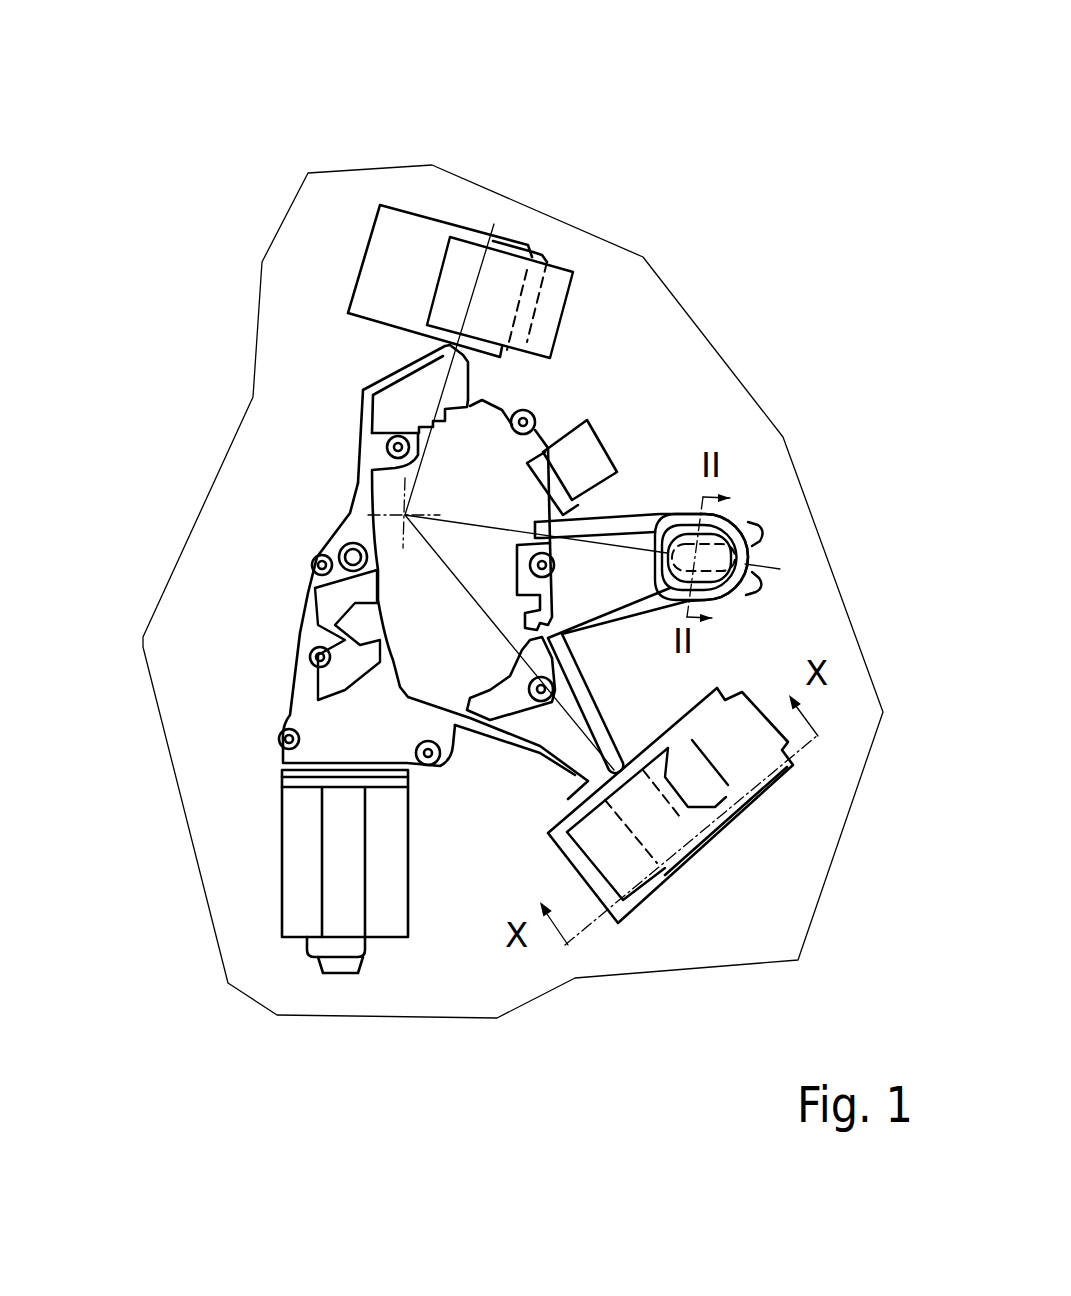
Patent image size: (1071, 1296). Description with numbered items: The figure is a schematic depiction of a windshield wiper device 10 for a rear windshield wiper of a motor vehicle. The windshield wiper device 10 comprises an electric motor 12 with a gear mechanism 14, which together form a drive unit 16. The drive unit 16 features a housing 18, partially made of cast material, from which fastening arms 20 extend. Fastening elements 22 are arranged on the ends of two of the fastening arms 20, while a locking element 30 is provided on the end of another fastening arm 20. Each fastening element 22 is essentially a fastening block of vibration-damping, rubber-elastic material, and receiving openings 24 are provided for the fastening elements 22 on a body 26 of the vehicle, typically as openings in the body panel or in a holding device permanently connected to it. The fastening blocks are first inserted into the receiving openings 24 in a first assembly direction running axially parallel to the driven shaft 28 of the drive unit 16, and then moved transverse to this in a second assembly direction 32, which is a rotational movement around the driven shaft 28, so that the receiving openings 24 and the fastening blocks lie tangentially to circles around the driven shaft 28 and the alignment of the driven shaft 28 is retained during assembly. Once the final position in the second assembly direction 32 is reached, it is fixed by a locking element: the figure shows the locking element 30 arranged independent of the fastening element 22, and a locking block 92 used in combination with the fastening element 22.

The windshield wiper device 10 is at (250, 157).
The electric motor 12 is at (358, 893).
The gear mechanism 14 is at (393, 483).
The drive unit 16 is at (258, 548).
The housing 18 is at (338, 680).
The fastening arms 20 is at (360, 385).
The fastening elements 22 is at (498, 284).
The receiving openings 24 is at (391, 218).
The body 26 is at (232, 912).
The driven shaft 28 is at (405, 516).
The locking element 30 is at (743, 518).
The second assembly direction 32 is at (308, 238).
The locking block 92 is at (740, 770).